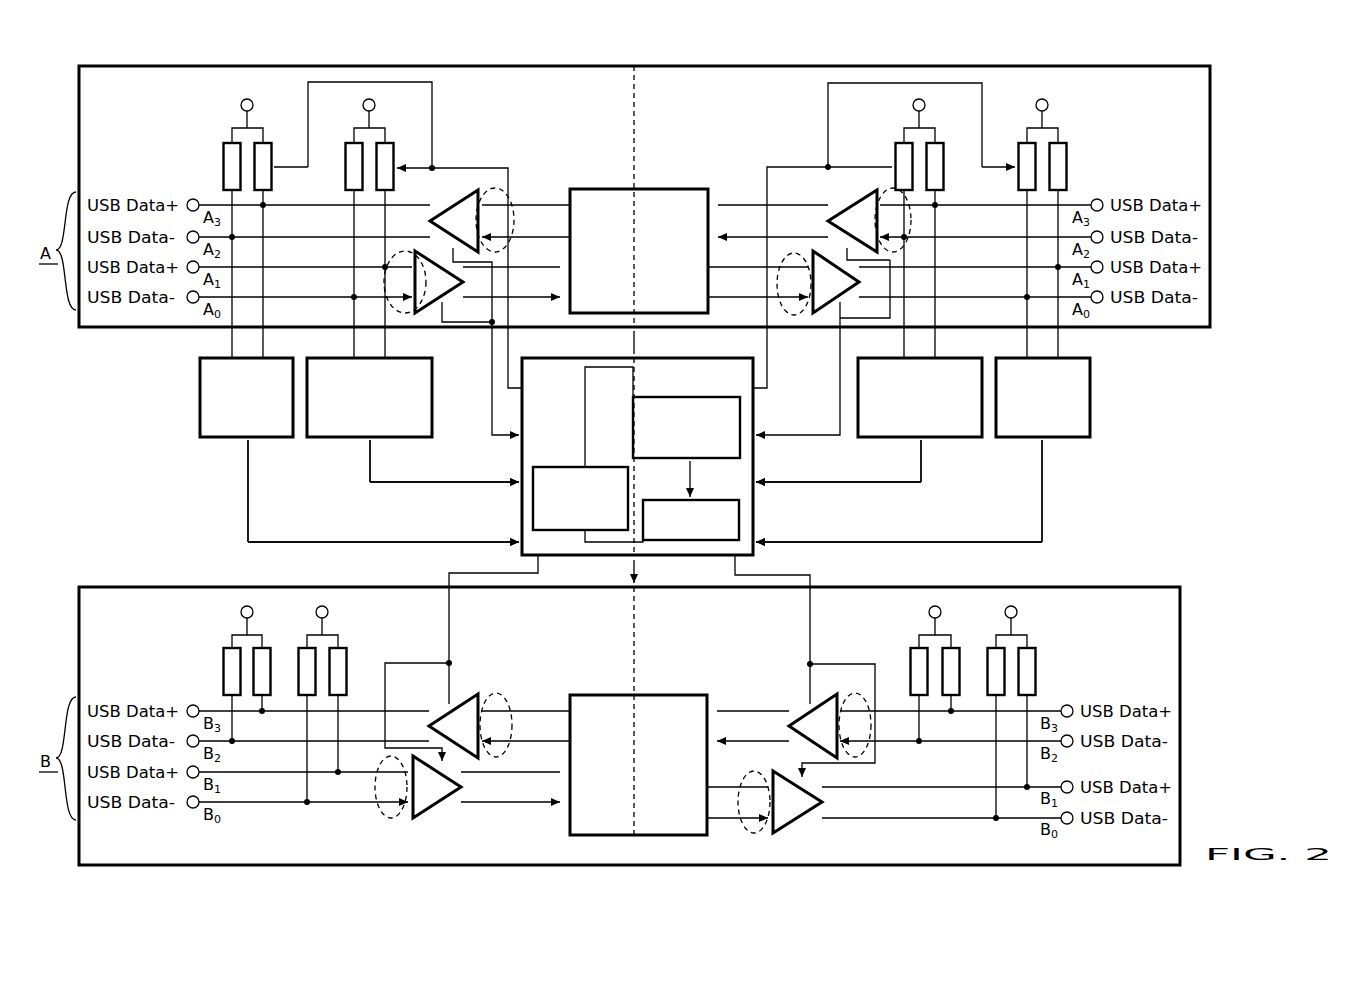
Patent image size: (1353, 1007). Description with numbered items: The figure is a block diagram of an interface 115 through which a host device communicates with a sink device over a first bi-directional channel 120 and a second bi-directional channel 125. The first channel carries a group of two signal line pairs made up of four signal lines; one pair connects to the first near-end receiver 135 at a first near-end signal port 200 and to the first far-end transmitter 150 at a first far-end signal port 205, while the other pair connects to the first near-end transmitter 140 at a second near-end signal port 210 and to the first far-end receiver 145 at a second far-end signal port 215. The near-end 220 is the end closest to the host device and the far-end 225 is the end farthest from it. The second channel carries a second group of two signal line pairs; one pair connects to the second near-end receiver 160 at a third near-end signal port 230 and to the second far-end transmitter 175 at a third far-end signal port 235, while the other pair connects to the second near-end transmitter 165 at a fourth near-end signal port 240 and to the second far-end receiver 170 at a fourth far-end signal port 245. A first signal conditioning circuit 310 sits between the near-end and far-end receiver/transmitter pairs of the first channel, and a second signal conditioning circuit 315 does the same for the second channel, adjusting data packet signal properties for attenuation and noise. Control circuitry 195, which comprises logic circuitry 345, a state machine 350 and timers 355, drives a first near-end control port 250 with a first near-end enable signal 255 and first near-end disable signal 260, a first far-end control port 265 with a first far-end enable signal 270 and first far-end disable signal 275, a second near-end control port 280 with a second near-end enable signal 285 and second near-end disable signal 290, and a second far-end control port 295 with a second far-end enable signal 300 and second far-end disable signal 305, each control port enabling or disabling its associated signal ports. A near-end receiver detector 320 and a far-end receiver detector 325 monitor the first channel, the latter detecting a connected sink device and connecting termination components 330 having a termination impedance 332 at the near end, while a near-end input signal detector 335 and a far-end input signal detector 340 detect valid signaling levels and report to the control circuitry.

The interface 115 is at (1221, 83).
The first bi-directional channel 120 is at (1022, 77).
The second bi-directional channel 125 is at (1175, 616).
The first near-end receiver 135 is at (440, 313).
The first near-end transmitter 140 is at (466, 190).
The first far-end receiver 145 is at (866, 210).
The first far-end transmitter 150 is at (820, 313).
The second near-end receiver 160 is at (432, 818).
The second near-end transmitter 165 is at (466, 694).
The second far-end receiver 170 is at (824, 696).
The second far-end transmitter 175 is at (818, 818).
The control circuitry 195 is at (666, 456).
The first near-end signal port 200 is at (403, 252).
The first far-end signal port 205 is at (794, 254).
The second near-end signal port 210 is at (499, 188).
The second far-end signal port 215 is at (905, 247).
The near-end 220 is at (538, 183).
The far-end 225 is at (738, 185).
The third near-end signal port 230 is at (382, 812).
The third far-end signal port 235 is at (768, 826).
The fourth near-end signal port 240 is at (506, 697).
The fourth far-end signal port 245 is at (866, 752).
The first near-end control port 250 is at (510, 332).
The first near-end enable signal 255 is at (417, 488).
The first near-end disable signal 260 is at (444, 461).
The first far-end control port 265 is at (843, 331).
The first far-end enable signal 270 is at (854, 488).
The first far-end disable signal 275 is at (838, 461).
The second near-end control port 280 is at (447, 660).
The second near-end enable signal 285 is at (299, 503).
The second near-end disable signal 290 is at (383, 491).
The second far-end control port 295 is at (808, 660).
The second far-end enable signal 300 is at (970, 503).
The second far-end disable signal 305 is at (899, 491).
The first signal conditioning circuit 310 is at (648, 189).
The second signal conditioning circuit 315 is at (660, 695).
The near-end receiver detector 320 is at (221, 437).
The far-end receiver detector 325 is at (1030, 437).
The termination components 330 is at (233, 128).
The termination impedance 332 is at (230, 158).
The near-end input signal detector 335 is at (311, 437).
The far-end input signal detector 340 is at (981, 437).
The logic circuitry 345 is at (612, 454).
The state machine 350 is at (636, 430).
The timers 355 is at (707, 500).